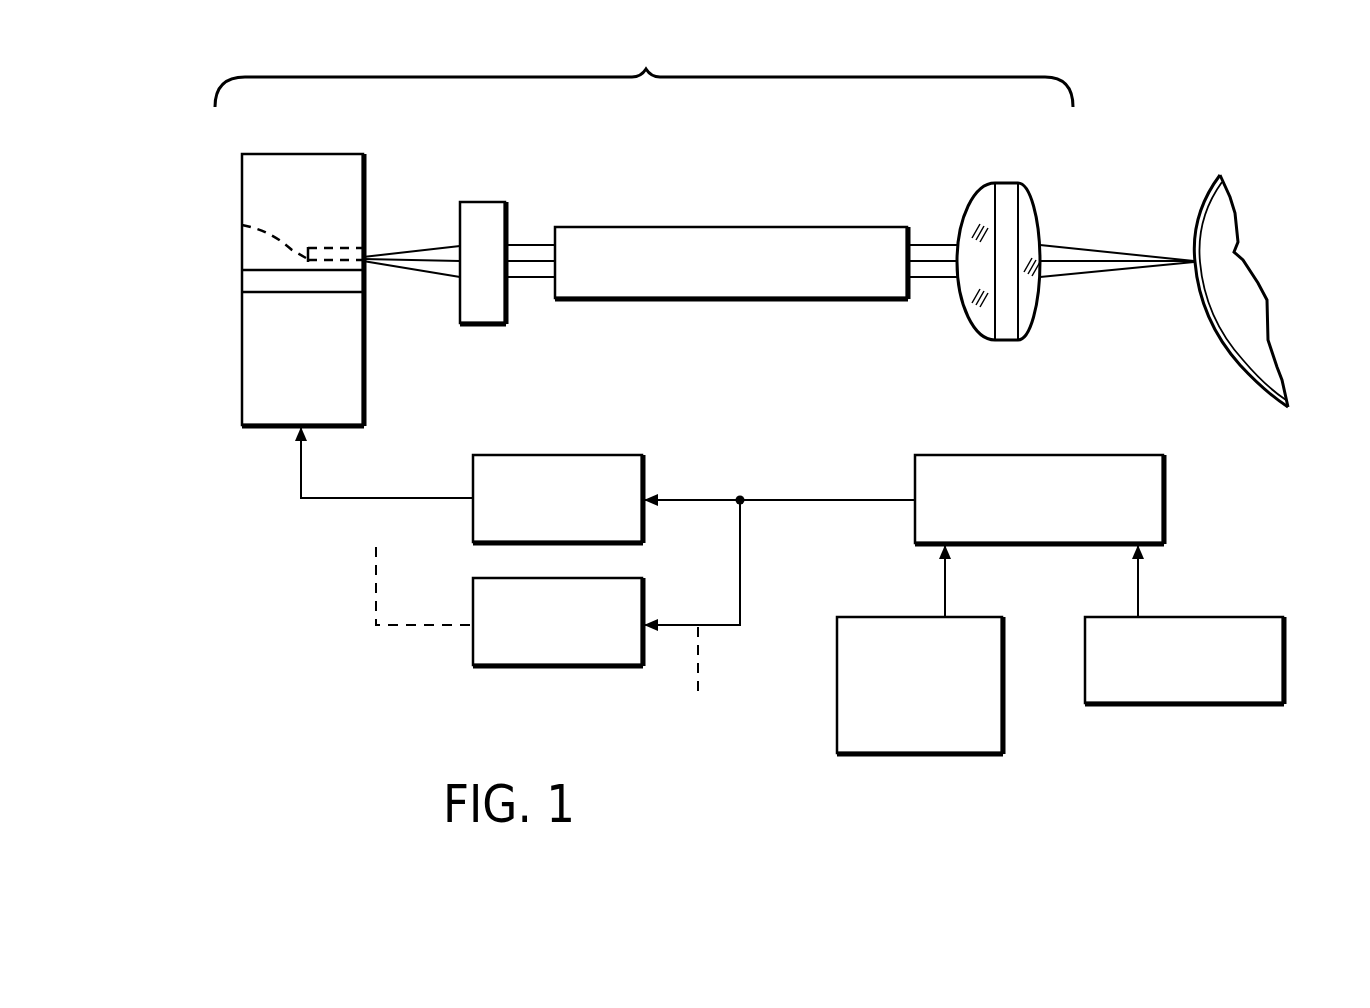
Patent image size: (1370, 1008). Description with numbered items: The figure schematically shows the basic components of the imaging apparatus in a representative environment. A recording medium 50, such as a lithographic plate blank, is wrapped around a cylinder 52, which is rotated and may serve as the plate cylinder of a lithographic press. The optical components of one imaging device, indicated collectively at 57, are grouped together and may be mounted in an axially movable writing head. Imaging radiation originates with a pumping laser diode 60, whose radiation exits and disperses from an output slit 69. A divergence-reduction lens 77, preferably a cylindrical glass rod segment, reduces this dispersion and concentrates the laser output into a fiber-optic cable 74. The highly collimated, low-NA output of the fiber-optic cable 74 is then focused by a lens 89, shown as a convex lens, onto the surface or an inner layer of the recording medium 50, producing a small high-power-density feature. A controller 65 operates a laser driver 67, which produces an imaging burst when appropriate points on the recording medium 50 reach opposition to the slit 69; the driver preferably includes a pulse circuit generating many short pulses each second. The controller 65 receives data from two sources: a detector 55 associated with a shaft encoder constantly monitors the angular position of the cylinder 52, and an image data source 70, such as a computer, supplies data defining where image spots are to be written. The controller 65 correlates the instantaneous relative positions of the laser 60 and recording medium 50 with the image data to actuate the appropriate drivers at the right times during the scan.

The imaging device components 57 is at (644, 73).
The pumping laser diode 60 is at (242, 346).
The output slit 69 is at (240, 223).
The divergence-reduction lens 77 is at (484, 202).
The fiber-optic cable 74 is at (710, 227).
The lens 89 is at (1006, 183).
The recording medium 50 is at (1212, 322).
The cylinder 52 is at (1230, 265).
The laser driver 67 is at (577, 455).
The controller 65 is at (989, 455).
The image data source 70 is at (837, 683).
The detector 55 is at (1284, 657).